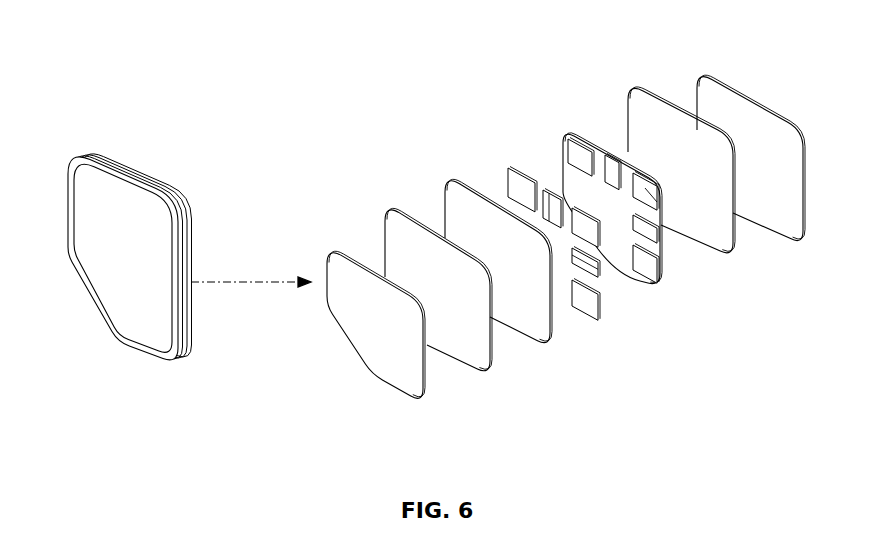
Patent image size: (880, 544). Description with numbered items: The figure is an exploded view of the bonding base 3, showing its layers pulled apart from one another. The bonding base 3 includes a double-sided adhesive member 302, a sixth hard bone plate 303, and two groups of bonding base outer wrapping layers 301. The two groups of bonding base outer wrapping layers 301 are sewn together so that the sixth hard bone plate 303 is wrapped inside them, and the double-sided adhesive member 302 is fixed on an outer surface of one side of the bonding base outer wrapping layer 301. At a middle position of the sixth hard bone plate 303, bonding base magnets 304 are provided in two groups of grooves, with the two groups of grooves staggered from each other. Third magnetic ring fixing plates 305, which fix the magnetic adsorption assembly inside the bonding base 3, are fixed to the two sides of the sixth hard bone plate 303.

The bonding base 3 is at (368, 84).
The bonding base outer wrapping layer 301 is at (778, 237).
The double-sided adhesive member 302 is at (400, 380).
The sixth hard bone plate 303 is at (572, 175).
The bonding base magnet 304 is at (521, 192).
The third magnetic ring fixing plate 305 is at (703, 243).